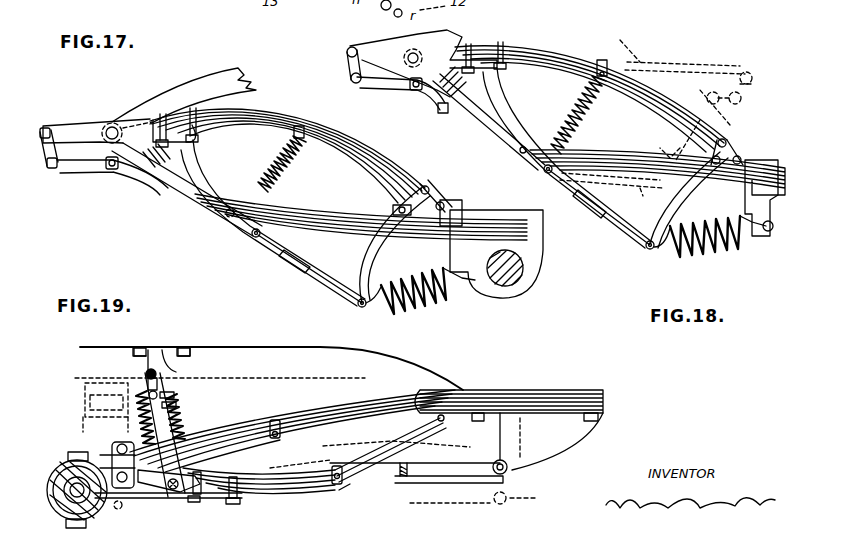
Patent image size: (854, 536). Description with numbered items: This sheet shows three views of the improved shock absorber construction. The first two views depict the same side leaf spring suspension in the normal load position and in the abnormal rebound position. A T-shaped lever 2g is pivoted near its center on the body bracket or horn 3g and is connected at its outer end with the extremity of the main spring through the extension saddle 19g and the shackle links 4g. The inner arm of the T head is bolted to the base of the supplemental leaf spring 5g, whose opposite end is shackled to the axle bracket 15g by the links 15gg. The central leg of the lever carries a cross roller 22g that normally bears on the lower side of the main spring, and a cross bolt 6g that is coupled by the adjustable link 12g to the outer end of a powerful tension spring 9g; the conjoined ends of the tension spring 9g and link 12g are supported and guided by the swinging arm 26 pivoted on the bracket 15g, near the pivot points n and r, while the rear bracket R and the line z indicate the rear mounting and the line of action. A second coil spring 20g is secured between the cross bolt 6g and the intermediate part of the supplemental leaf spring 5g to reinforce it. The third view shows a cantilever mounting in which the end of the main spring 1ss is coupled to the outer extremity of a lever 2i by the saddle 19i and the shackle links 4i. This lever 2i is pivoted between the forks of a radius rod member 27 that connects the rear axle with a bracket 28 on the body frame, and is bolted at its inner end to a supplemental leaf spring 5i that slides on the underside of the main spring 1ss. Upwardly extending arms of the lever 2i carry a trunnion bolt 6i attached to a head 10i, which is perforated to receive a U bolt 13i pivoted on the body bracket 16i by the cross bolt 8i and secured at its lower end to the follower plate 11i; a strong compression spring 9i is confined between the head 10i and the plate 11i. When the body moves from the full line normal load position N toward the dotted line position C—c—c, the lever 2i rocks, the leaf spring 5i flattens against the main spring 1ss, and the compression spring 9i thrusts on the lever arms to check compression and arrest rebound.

In FIG. 17, the lever 2g is at (90, 128).
In FIG. 18, the lever 2g is at (466, 97).
In FIG. 17, the body bracket or horn 3g is at (178, 92).
In FIG. 17, the shackle links 4g is at (50, 168).
In FIG. 18, the shackle links 4g is at (345, 62).
In FIG. 17, the supplemental leaf spring 5g is at (238, 126).
In FIG. 18, the supplemental leaf spring 5g is at (583, 58).
In FIG. 17, the cross bolt 6g is at (250, 238).
In FIG. 18, the cross bolt 6g is at (546, 176).
In FIG. 17, the tension spring 9g is at (433, 313).
In FIG. 18, the tension spring 9g is at (725, 256).
In FIG. 17, the adjustable link 12g is at (330, 290).
In FIG. 18, the adjustable link 12g is at (612, 226).
In FIG. 17, the axle bracket 15g is at (392, 212).
In FIG. 18, the axle bracket 15g is at (682, 156).
In FIG. 17, the links 15gg is at (442, 210).
In FIG. 18, the links 15gg is at (735, 150).
In FIG. 17, the extension saddle 19g is at (100, 175).
In FIG. 18, the extension saddle 19g is at (412, 98).
In FIG. 17, the second coil spring 20g is at (288, 180).
In FIG. 18, the second coil spring 20g is at (588, 126).
In FIG. 17, the cross roller 22g is at (220, 219).
In FIG. 18, the cross roller 22g is at (516, 150).
In FIG. 17, the swinging arm 26 is at (364, 262).
In FIG. 18, the swinging arm 26 is at (678, 208).
In FIG. 17, the pivot n is at (358, 306).
In FIG. 18, the pivot r is at (639, 249).
In FIG. 18, the line of action z is at (655, 192).
In FIG. 18, the dotted line position c is at (714, 116).
In FIG. 19, the dotted line position c is at (260, 461).
In FIG. 18, the dotted line position C is at (762, 99).
In FIG. 19, the dotted line position C is at (312, 437).
In FIG. 17, the normal load position N is at (533, 226).
In FIG. 19, the normal load position N is at (336, 371).
In FIG. 18, the rear bracket R is at (657, 190).
In FIG. 19, the radius rod member 27 is at (383, 482).
In FIG. 19, the bracket 28 is at (548, 430).
In FIG. 19, the main spring 1ss is at (312, 412).
In FIG. 19, the lever 2i is at (182, 492).
In FIG. 19, the shackle links 4i is at (136, 498).
In FIG. 19, the supplemental leaf spring 5i is at (274, 496).
In FIG. 19, the trunnion bolt 6i is at (178, 402).
In FIG. 19, the cross bolt 8i is at (142, 373).
In FIG. 19, the compression spring 9i is at (82, 380).
In FIG. 19, the head 10i is at (170, 390).
In FIG. 19, the follower plate 11i is at (208, 440).
In FIG. 19, the U bolt 13i is at (160, 372).
In FIG. 19, the body bracket 16i is at (168, 356).
In FIG. 19, the saddle 19i is at (110, 452).